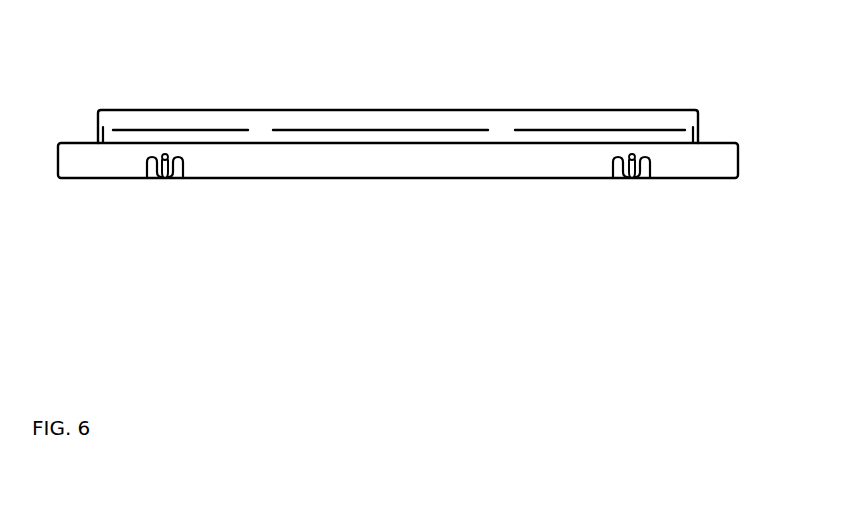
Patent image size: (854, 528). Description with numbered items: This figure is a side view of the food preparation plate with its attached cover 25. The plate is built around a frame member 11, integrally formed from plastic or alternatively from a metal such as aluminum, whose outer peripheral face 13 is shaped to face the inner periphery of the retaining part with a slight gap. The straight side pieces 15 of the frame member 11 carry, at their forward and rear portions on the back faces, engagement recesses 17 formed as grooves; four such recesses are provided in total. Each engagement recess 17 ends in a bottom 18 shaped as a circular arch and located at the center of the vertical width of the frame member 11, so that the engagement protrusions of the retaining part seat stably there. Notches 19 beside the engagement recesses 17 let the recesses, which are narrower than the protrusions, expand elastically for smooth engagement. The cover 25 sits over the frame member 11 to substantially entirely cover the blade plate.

The frame member 11 is at (343, 178).
The outer peripheral face 13 is at (519, 162).
The side pieces 15 is at (445, 162).
The engagement recesses 17 is at (165, 178).
The bottoms 18 is at (165, 154).
The notches 19 is at (150, 178).
The cover 25 is at (428, 110).